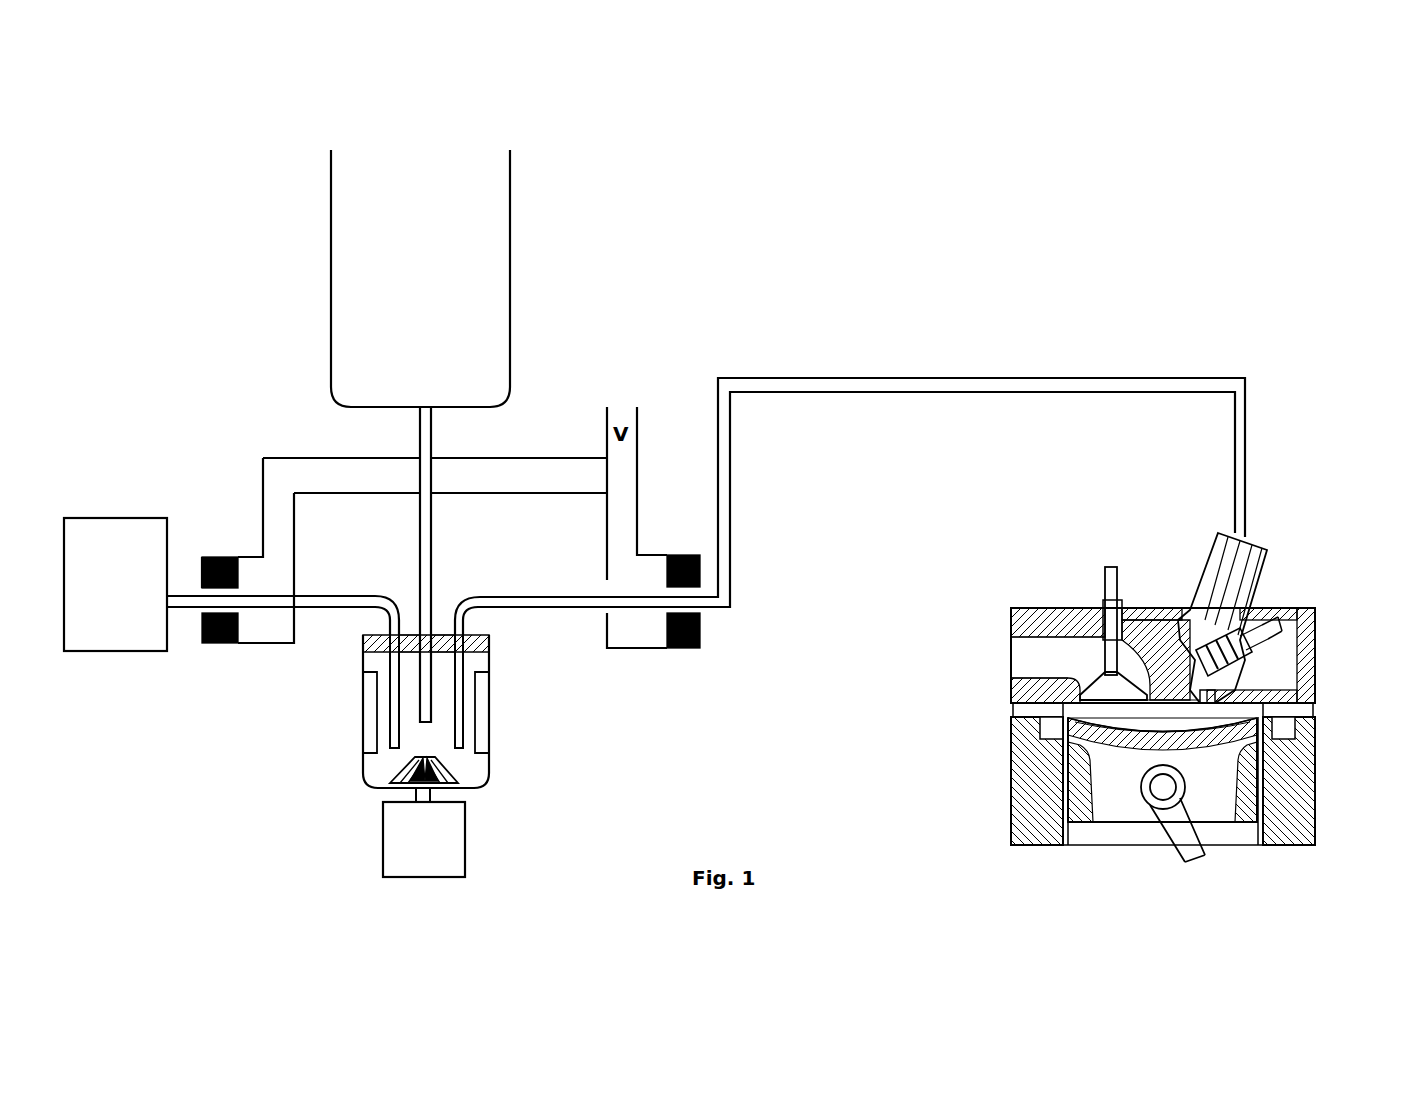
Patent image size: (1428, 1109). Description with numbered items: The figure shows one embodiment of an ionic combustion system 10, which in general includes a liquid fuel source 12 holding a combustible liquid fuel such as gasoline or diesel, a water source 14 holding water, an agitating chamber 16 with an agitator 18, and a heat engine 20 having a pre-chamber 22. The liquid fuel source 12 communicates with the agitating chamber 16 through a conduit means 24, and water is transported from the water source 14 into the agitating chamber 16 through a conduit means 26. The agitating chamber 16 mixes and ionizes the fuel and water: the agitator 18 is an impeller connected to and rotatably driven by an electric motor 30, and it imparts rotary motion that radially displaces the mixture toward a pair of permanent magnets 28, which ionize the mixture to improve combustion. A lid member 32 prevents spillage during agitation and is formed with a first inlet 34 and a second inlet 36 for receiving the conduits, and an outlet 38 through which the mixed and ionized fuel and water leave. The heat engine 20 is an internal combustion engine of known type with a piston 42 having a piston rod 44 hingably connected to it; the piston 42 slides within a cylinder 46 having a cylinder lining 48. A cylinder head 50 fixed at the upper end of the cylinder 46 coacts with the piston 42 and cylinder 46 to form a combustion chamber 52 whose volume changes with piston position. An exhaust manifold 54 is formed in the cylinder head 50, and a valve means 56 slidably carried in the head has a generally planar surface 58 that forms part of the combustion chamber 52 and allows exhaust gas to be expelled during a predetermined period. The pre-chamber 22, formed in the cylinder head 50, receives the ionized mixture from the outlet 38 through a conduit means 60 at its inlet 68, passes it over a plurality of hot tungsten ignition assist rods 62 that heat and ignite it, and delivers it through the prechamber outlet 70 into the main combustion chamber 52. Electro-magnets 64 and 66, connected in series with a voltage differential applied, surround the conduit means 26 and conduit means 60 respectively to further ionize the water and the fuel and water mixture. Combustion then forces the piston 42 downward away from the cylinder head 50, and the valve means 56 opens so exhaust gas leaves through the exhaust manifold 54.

The ionic combustion system 10 is at (979, 205).
The liquid fuel source 12 is at (510, 267).
The water source 14 is at (108, 515).
The agitating chamber 16 is at (492, 662).
The agitator 18 is at (458, 775).
The heat engine 20 is at (1098, 774).
The pre-chamber 22 is at (1183, 630).
The conduit means 24 is at (432, 437).
The conduit means 26 is at (324, 595).
The permanent magnets 28 is at (481, 705).
The electric motor 30 is at (465, 840).
The lid member 32 is at (475, 632).
The first inlet 34 is at (402, 600).
The second inlet 36 is at (432, 630).
The outlet 38 is at (440, 632).
The piston 42 is at (1193, 727).
The piston rod 44 is at (1187, 838).
The cylinder 46 is at (1030, 760).
The cylinder lining 48 is at (1161, 799).
The cylinder head 50 is at (1005, 606).
The combustion chamber 52 is at (1162, 721).
The exhaust manifold 54 is at (1058, 657).
The valve means 56 is at (1105, 585).
The planar surface 58 is at (1112, 707).
The conduit means 60 is at (564, 597).
The ignition assist rods 62 is at (1240, 660).
The electro-magnet 64 is at (216, 645).
The electro-magnet 66 is at (683, 650).
The inlet 68 is at (1222, 632).
The prechamber outlet 70 is at (1203, 703).